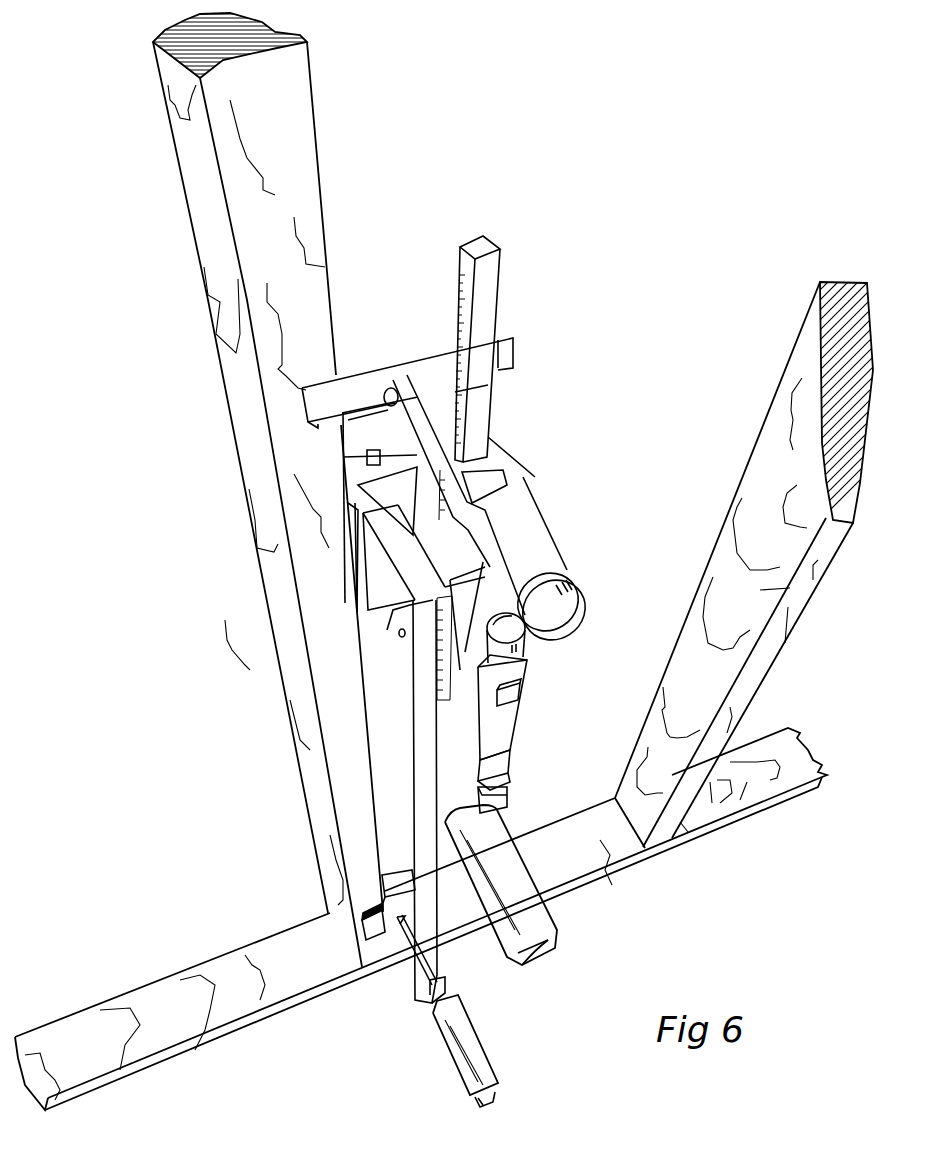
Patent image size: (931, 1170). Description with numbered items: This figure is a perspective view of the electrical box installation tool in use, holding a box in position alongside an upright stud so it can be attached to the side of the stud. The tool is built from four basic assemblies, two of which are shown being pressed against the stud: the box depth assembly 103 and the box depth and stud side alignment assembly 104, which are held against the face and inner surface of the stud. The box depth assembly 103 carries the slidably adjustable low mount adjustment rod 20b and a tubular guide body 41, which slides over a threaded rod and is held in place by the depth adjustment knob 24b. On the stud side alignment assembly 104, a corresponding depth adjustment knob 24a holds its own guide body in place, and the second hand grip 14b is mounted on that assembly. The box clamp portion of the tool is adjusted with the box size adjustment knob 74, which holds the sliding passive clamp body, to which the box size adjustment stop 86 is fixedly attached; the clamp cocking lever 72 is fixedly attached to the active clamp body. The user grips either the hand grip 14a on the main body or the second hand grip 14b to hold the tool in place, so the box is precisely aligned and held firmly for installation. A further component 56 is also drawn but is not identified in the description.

The low mount adjustment rod 20b is at (487, 298).
The box depth assembly 103 is at (352, 392).
The tubular guide body 41 is at (572, 462).
The depth adjustment knob 24b is at (573, 620).
The box size adjustment knob 74 is at (527, 648).
The box size adjustment stop 86 is at (523, 695).
The clamp cocking lever 72 is at (495, 785).
The slide block 56 is at (500, 806).
The hand grip 14a is at (552, 937).
The box depth and stud side alignment assembly 104 is at (380, 923).
The second hand grip 14b is at (480, 1065).
The depth adjustment knob 24a is at (495, 1097).